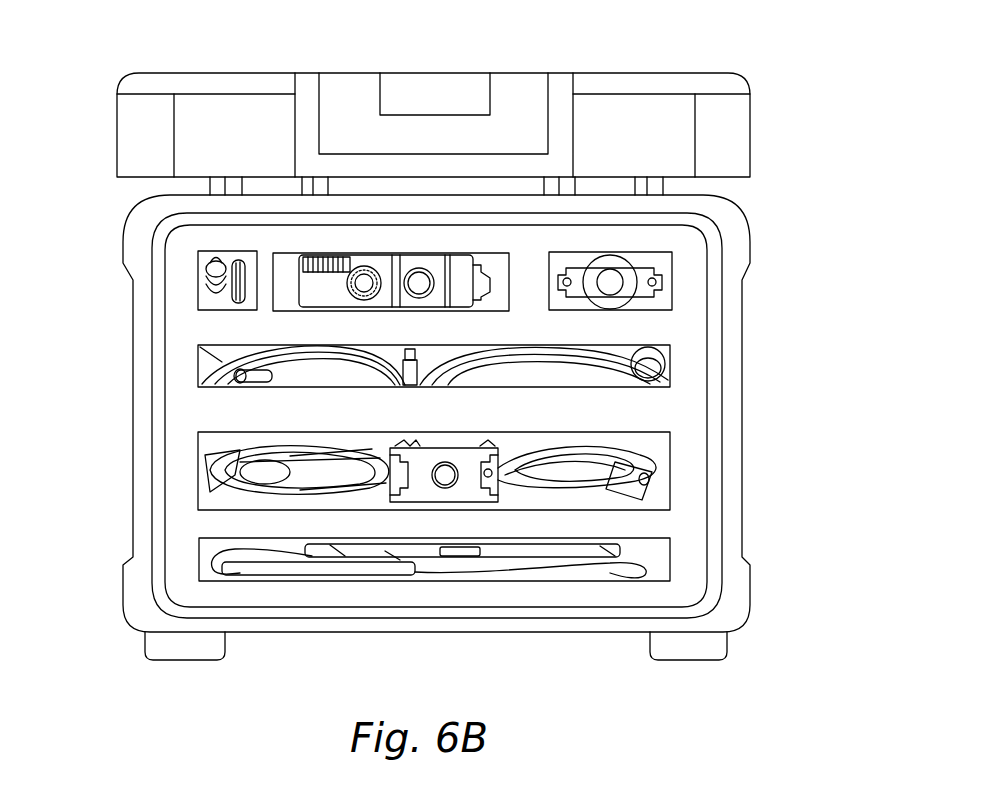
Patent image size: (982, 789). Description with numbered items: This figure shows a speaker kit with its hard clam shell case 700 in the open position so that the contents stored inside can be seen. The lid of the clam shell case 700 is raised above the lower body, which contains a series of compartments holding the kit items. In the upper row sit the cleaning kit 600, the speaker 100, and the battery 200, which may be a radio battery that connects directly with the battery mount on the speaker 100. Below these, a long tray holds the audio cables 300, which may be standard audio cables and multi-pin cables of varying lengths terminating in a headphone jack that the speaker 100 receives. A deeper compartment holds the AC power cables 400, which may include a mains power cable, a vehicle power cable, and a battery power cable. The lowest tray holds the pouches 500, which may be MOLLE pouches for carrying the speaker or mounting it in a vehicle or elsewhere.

The speaker 100 is at (372, 263).
The battery 200 is at (672, 275).
The audio cables 300 is at (216, 364).
The AC power cables 400 is at (502, 492).
The pouches 500 is at (297, 567).
The cleaning kit 600 is at (198, 290).
The hard clam shell case 700 is at (742, 465).